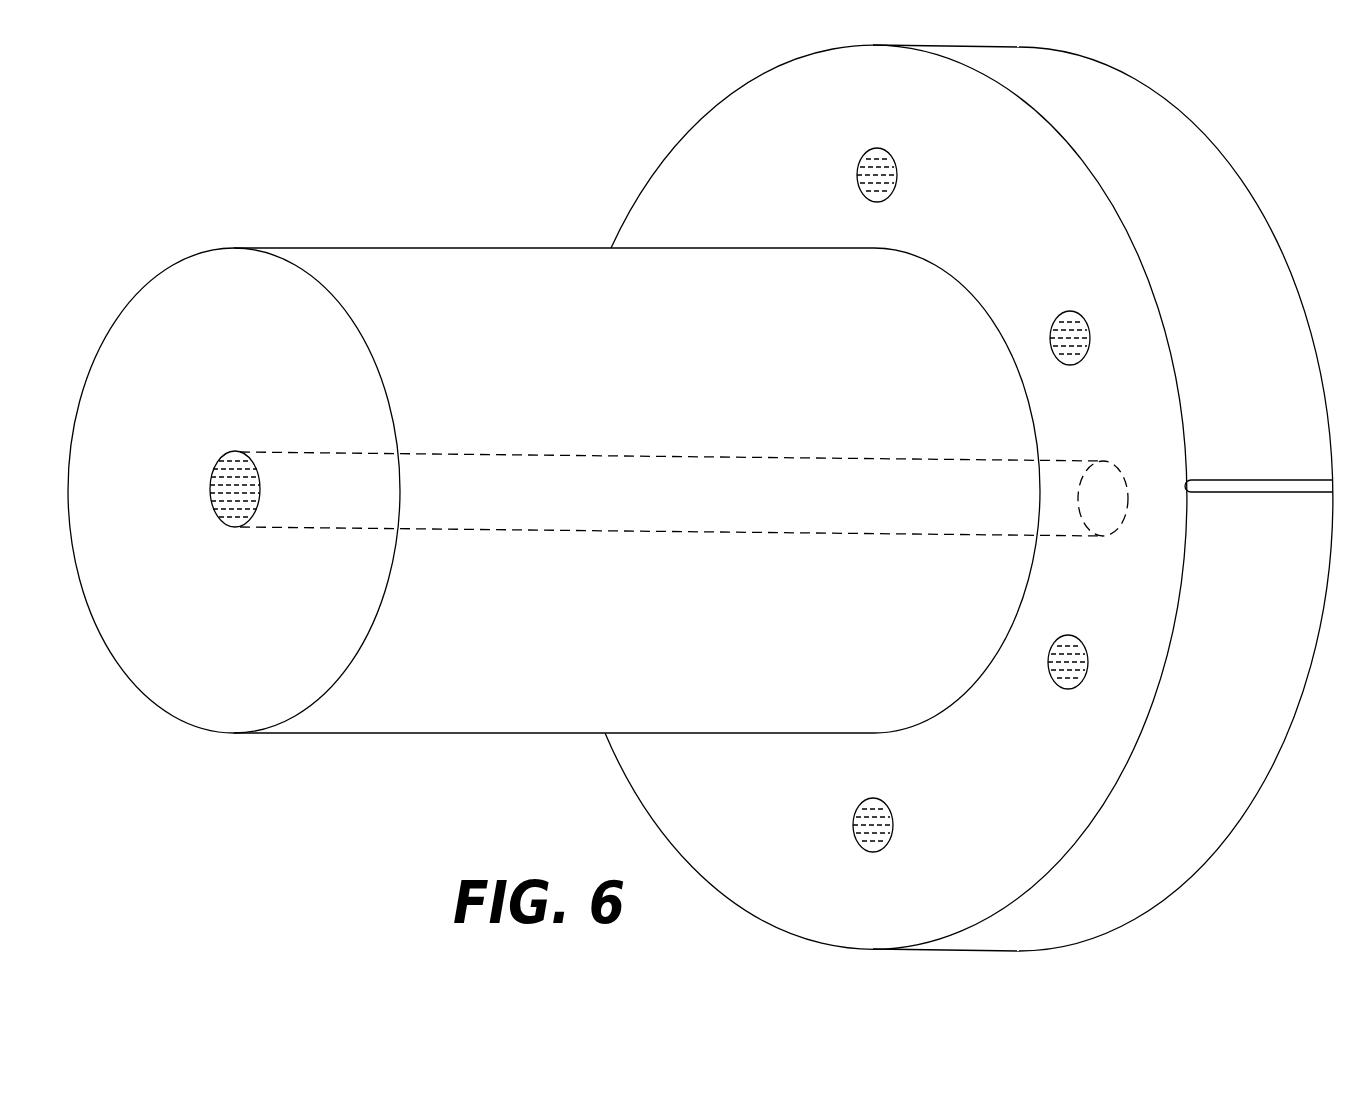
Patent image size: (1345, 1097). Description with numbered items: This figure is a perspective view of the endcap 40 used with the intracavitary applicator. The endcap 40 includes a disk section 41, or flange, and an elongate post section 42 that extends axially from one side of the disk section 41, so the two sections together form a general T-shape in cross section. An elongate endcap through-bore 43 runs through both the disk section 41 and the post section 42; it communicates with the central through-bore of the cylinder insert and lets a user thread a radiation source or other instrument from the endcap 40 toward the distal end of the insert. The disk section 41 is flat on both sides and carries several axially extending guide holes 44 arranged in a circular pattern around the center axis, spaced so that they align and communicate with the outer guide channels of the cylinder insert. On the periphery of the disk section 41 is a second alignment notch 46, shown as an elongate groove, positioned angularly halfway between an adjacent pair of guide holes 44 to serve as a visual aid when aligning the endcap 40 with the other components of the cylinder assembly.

The endcap 40 is at (195, 150).
The disk section 41 is at (1178, 125).
The elongate post section 42 is at (425, 257).
The endcap through-bore 43 is at (224, 498).
The guide holes 44 is at (897, 183).
The second alignment notch 46 is at (1252, 495).